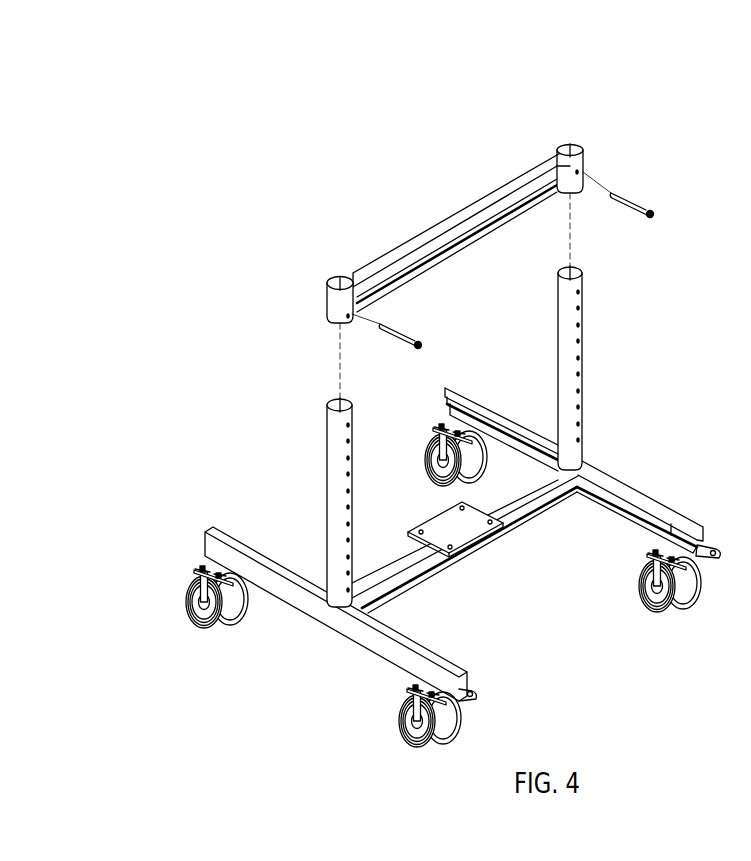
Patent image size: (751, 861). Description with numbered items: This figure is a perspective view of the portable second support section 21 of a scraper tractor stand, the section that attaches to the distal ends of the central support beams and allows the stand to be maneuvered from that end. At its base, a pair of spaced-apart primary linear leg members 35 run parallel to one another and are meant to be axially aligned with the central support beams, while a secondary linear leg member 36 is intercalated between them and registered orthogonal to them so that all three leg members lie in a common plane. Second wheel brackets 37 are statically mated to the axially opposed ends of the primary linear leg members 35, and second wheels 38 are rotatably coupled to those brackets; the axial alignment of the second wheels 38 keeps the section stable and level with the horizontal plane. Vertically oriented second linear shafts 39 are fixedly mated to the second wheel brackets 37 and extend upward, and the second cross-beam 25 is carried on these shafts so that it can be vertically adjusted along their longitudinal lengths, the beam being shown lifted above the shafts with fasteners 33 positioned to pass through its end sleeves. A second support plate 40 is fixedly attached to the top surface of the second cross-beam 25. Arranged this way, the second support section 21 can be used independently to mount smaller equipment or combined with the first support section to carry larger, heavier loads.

The portable second support section 21 is at (431, 96).
The second cross-beam 25 is at (527, 182).
The fasteners 33 is at (400, 333).
The primary linear leg members 35 is at (356, 627).
The secondary linear leg member 36 is at (538, 510).
The second wheel brackets 37 is at (198, 570).
The second wheels 38 is at (208, 630).
The second linear shafts 39 is at (335, 452).
The second support plate 40 is at (458, 532).